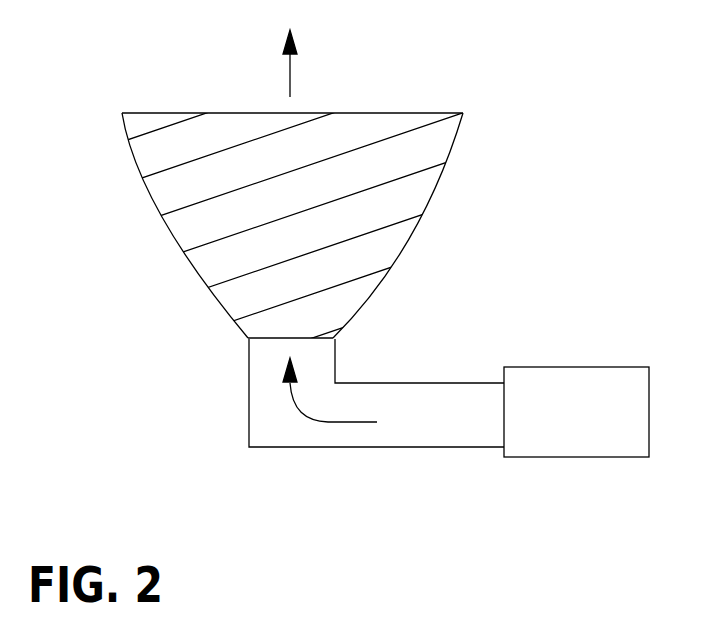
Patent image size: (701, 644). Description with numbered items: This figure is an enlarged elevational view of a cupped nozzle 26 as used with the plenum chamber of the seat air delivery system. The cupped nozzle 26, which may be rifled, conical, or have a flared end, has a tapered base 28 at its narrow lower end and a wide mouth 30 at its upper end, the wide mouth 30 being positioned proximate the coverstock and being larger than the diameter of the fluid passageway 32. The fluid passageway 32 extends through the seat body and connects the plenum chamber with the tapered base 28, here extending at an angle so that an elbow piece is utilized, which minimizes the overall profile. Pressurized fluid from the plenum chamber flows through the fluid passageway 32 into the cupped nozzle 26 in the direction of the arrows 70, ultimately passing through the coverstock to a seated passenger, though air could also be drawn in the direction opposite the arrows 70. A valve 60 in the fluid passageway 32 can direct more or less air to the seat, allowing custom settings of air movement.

The cupped nozzle 26 is at (188, 143).
The tapered base 28 is at (347, 339).
The wide mouth 30 is at (466, 122).
The fluid passageway 32 is at (249, 402).
The valve 60 is at (565, 458).
The arrow 70 is at (288, 80).